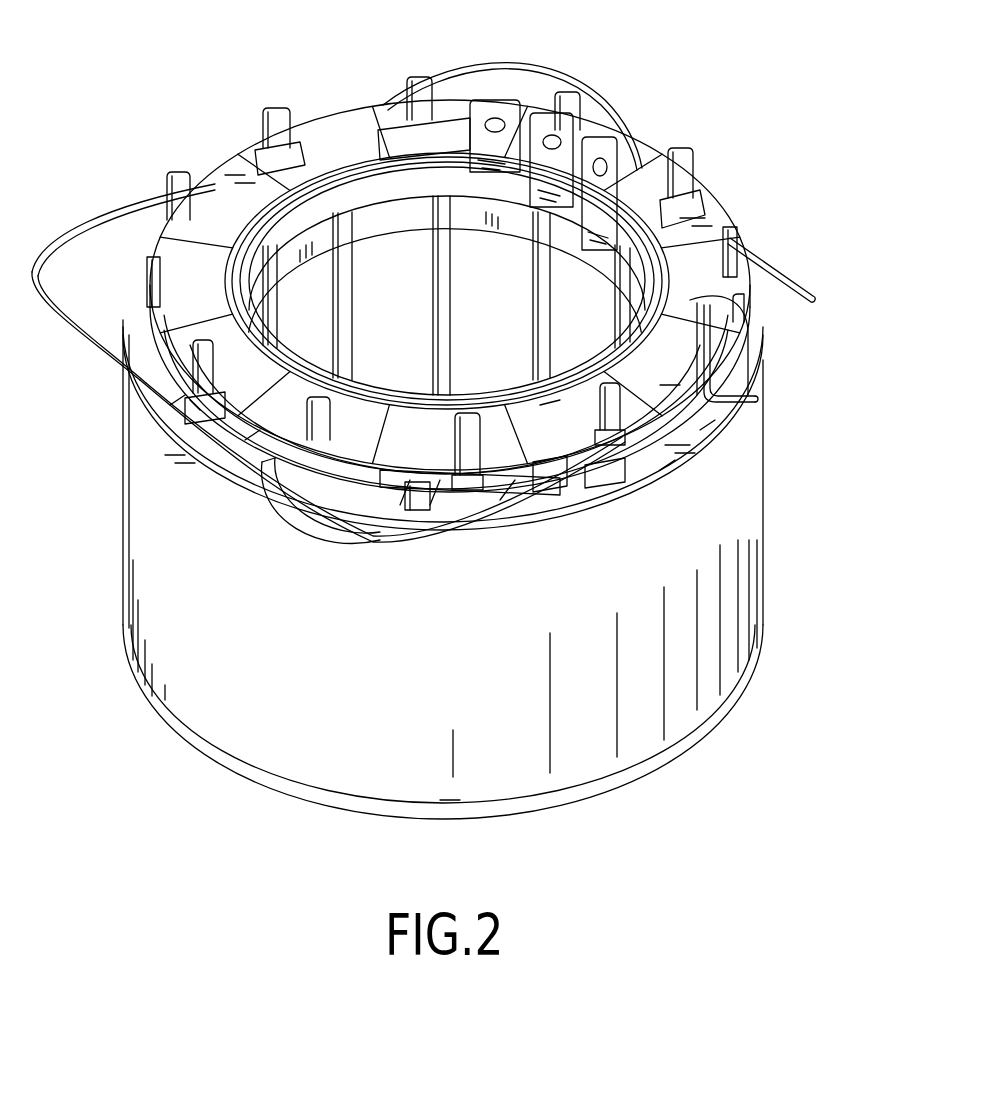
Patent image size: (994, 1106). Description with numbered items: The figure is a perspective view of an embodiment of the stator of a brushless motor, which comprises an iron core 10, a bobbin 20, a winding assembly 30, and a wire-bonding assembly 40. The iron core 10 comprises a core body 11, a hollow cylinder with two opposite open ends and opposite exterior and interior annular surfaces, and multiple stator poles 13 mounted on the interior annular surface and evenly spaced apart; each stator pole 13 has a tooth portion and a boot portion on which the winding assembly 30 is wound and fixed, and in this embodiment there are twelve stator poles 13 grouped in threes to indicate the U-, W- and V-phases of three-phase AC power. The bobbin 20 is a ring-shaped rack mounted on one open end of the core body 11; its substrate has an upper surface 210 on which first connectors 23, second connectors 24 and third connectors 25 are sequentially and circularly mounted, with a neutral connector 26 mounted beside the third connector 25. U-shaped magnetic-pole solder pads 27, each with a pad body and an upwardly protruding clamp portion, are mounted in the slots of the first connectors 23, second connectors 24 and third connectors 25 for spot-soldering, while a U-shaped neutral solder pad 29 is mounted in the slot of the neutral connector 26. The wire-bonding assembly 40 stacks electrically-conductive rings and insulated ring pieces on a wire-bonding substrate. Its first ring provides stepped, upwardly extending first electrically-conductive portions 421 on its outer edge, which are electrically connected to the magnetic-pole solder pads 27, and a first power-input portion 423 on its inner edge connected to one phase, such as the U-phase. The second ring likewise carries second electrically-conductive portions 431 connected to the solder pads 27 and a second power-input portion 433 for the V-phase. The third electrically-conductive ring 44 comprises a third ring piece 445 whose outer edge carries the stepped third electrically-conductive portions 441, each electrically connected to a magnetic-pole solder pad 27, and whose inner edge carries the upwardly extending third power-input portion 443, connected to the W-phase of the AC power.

The iron core 10 is at (415, 569).
The core body 11 is at (345, 798).
The stator poles 13 is at (447, 295).
The bobbin 20 is at (411, 422).
The first connectors 23 is at (415, 475).
The second connectors 24 is at (320, 527).
The third connectors 25 is at (382, 484).
The neutral connector 26 is at (470, 529).
The magnetic-pole solder pads 27 is at (453, 301).
The neutral solder pad 29 is at (413, 542).
The winding assembly 30 is at (337, 203).
The wire-bonding assembly 40 is at (439, 289).
The third electrically-conductive ring 44 is at (447, 243).
The upper surface 210 is at (724, 398).
The first electrically-conductive portions 421 is at (481, 162).
The first power-input portion 423 is at (649, 171).
The second electrically-conductive portions 431 is at (477, 263).
The second power-input portion 433 is at (603, 129).
The third electrically-conductive portions 441 is at (452, 253).
The third power-input portion 443 is at (449, 96).
The third ring piece 445 is at (567, 487).